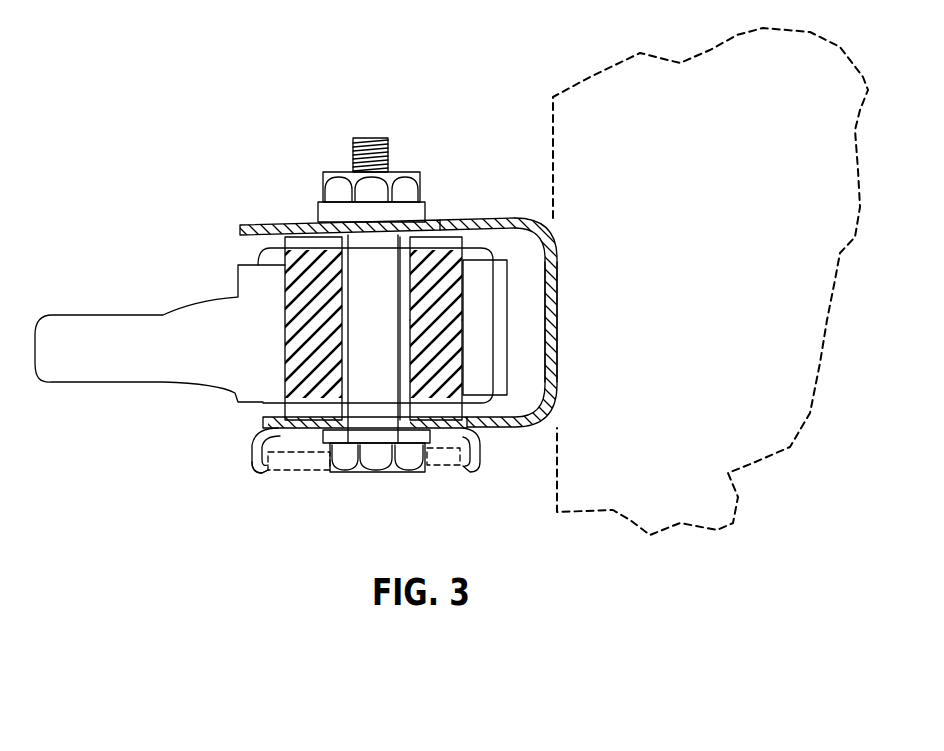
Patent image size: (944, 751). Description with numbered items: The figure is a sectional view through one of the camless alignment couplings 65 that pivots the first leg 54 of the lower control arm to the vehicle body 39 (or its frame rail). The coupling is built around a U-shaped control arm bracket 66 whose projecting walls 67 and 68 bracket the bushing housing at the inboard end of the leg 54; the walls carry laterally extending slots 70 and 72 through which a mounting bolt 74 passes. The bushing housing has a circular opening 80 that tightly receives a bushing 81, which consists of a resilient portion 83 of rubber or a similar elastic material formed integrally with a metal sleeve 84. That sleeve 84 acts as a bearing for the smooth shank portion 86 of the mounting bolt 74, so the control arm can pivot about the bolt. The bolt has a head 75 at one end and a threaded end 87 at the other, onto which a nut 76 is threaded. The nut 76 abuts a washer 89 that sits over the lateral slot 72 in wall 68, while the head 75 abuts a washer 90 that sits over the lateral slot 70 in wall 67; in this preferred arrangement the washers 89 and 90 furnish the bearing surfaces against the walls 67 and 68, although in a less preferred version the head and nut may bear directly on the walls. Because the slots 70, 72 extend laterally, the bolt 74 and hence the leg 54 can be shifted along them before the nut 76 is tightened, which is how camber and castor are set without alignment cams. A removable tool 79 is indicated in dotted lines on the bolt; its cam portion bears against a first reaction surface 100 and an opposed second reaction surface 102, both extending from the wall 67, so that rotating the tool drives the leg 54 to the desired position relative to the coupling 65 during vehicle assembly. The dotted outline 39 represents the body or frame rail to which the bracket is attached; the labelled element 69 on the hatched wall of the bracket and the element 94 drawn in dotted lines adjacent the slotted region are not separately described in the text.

The vehicle body 39 is at (585, 78).
The first leg 54 is at (100, 328).
The camless alignment coupling 65 is at (562, 297).
The U-shaped control arm bracket 66 is at (523, 320).
The projecting wall 67 is at (250, 427).
The projecting wall 68 is at (460, 222).
The bracket wall 69 is at (551, 343).
The lateral slot 70 is at (337, 428).
The lateral slot 72 is at (430, 222).
The mounting bolt 74 is at (342, 460).
The head 75 is at (372, 474).
The nut 76 is at (405, 180).
The removable tool 79 is at (283, 470).
The circular opening 80 is at (468, 327).
The bushing 81 is at (452, 360).
The resilient portion 83 is at (457, 281).
The metal sleeve 84 is at (323, 357).
The smooth shank portion 86 is at (372, 422).
The threaded end 87 is at (363, 137).
The washer 89 is at (318, 212).
The washer 90 is at (408, 437).
The slot 94 is at (440, 466).
The first reaction surface 100 is at (257, 475).
The second reaction surface 102 is at (470, 468).